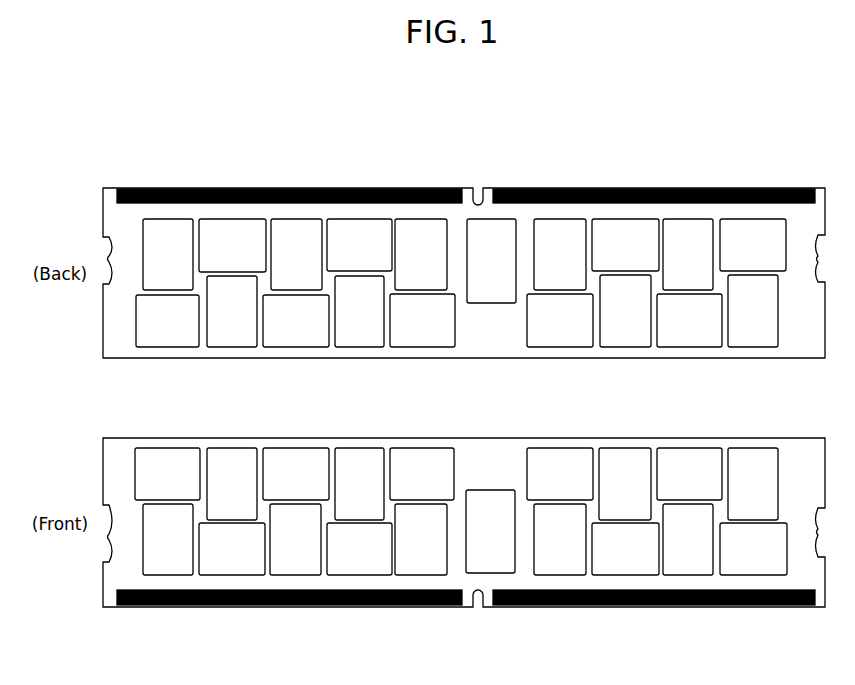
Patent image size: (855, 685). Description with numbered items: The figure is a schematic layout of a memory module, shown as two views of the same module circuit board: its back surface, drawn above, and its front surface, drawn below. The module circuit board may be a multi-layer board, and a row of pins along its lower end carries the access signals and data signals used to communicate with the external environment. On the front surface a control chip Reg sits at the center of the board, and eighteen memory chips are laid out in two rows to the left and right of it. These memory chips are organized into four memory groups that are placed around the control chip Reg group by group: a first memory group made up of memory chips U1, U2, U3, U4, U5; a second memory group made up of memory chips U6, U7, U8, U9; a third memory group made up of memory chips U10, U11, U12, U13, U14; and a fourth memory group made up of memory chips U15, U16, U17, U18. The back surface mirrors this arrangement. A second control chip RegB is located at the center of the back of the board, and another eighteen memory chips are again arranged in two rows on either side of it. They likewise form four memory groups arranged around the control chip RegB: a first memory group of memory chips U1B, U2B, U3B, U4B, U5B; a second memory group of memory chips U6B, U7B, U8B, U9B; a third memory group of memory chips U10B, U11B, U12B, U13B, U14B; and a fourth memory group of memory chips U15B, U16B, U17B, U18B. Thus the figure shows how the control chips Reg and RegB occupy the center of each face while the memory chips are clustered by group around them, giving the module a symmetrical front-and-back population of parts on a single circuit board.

The memory chip U1 is at (167, 474).
The memory chip U2 is at (232, 484).
The memory chip U3 is at (296, 474).
The memory chip U4 is at (359, 484).
The memory chip U5 is at (422, 474).
The memory chip U6 is at (560, 474).
The memory chip U7 is at (625, 484).
The memory chip U8 is at (689, 474).
The memory chip U9 is at (753, 484).
The memory chip U10 is at (168, 539).
The memory chip U11 is at (232, 549).
The memory chip U12 is at (295, 539).
The memory chip U13 is at (359, 549).
The memory chip U14 is at (421, 539).
The memory chip U15 is at (560, 539).
The memory chip U16 is at (625, 549).
The memory chip U17 is at (688, 539).
The memory chip U18 is at (753, 549).
The control chip Reg is at (490, 531).
The memory chip U1B is at (168, 254).
The memory chip U2B is at (232, 245).
The memory chip U3B is at (296, 254).
The memory chip U4B is at (359, 245).
The memory chip U5B is at (421, 254).
The memory chip U6B is at (560, 254).
The memory chip U7B is at (625, 245).
The memory chip U8B is at (688, 254).
The memory chip U9B is at (753, 245).
The memory chip U10B is at (167, 321).
The memory chip U11B is at (232, 311).
The memory chip U12B is at (296, 321).
The memory chip U13B is at (359, 311).
The memory chip U14B is at (422, 320).
The memory chip U15B is at (560, 320).
The memory chip U16B is at (625, 311).
The memory chip U17B is at (689, 320).
The memory chip U18B is at (753, 311).
The control chip RegB is at (491, 261).